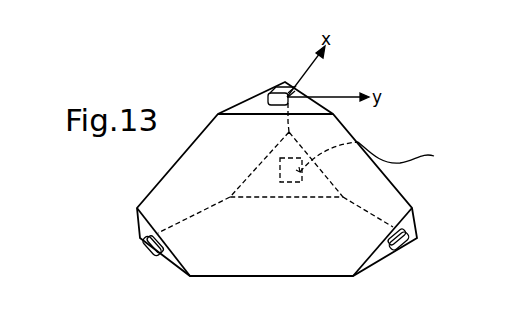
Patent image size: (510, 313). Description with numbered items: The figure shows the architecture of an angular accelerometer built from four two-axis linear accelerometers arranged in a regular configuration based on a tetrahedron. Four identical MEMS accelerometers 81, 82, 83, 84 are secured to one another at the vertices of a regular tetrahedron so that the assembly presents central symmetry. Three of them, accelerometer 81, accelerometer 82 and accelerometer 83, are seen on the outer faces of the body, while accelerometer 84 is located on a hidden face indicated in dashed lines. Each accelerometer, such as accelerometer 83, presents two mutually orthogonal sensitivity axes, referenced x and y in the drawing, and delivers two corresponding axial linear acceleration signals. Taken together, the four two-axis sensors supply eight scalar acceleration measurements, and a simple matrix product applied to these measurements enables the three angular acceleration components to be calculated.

The MEMS accelerometer 81 is at (146, 245).
The MEMS accelerometer 82 is at (404, 246).
The MEMS accelerometer 83 is at (281, 89).
The MEMS accelerometer 84 is at (409, 154).